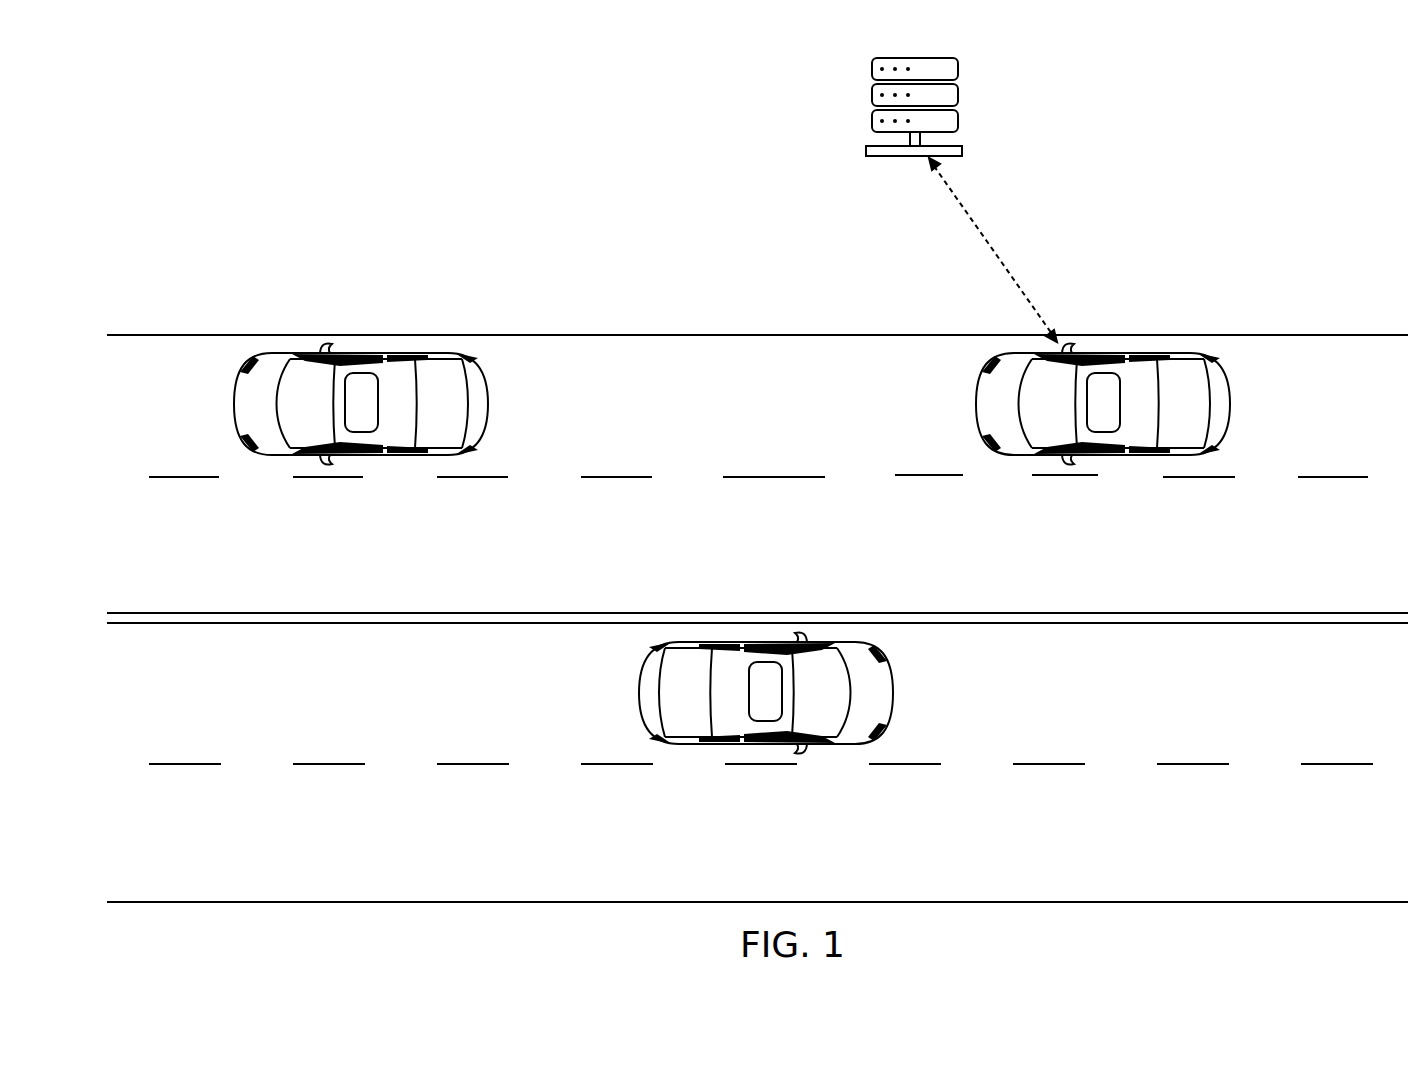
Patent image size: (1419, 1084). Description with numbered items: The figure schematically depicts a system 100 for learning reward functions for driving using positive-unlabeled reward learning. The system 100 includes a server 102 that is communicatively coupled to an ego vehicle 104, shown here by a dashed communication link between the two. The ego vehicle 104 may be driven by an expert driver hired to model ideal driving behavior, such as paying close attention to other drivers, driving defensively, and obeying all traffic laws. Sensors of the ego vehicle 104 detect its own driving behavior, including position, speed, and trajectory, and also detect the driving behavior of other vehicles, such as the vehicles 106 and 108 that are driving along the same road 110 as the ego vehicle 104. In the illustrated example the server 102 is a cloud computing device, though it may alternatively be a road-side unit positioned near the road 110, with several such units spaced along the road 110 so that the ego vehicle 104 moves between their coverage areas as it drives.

The system 100 is at (121, 131).
The server 102 is at (958, 66).
The ego vehicle 104 is at (1222, 398).
The vehicle 106 is at (480, 398).
The vehicle 108 is at (650, 690).
The road 110 is at (757, 571).